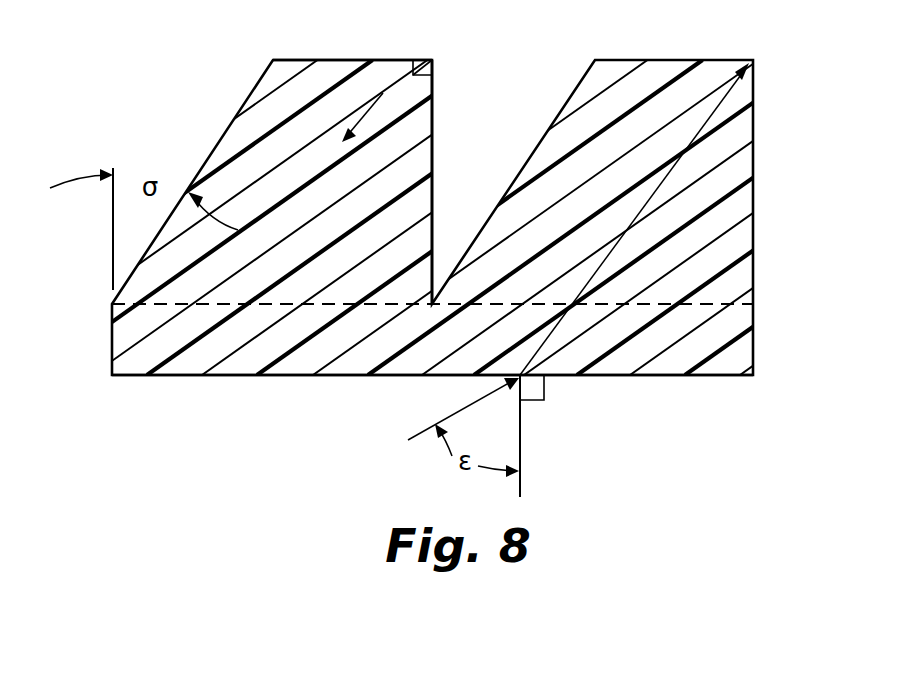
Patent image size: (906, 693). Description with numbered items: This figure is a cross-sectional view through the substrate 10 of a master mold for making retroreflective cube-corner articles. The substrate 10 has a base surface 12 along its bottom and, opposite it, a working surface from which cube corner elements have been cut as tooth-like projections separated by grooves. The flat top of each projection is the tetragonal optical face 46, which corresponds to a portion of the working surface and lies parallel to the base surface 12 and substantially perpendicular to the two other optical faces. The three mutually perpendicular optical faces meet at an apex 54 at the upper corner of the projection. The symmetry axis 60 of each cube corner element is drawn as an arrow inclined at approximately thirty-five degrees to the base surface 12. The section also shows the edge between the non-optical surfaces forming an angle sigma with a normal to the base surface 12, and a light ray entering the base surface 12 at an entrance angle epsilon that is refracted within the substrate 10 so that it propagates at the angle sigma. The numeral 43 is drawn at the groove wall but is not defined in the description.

The substrate 10 is at (753, 328).
The base surface 12 is at (683, 377).
The tetragonal optical face 46 is at (302, 58).
The slot side wall 43 is at (433, 108).
The apex 54 is at (433, 58).
The symmetry axis 60 is at (383, 93).